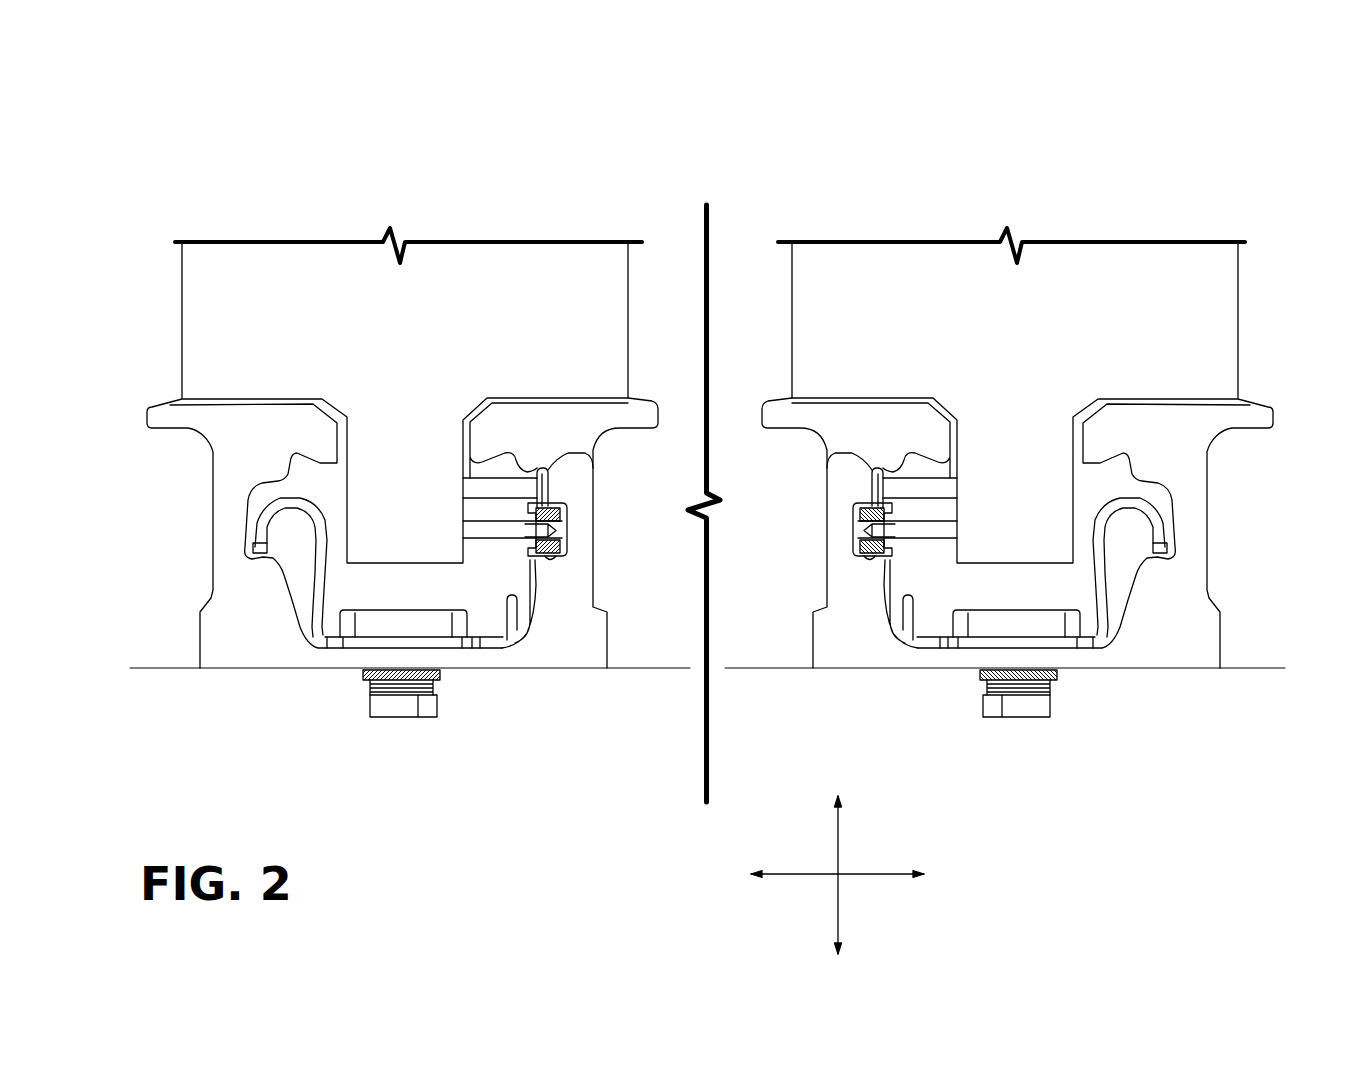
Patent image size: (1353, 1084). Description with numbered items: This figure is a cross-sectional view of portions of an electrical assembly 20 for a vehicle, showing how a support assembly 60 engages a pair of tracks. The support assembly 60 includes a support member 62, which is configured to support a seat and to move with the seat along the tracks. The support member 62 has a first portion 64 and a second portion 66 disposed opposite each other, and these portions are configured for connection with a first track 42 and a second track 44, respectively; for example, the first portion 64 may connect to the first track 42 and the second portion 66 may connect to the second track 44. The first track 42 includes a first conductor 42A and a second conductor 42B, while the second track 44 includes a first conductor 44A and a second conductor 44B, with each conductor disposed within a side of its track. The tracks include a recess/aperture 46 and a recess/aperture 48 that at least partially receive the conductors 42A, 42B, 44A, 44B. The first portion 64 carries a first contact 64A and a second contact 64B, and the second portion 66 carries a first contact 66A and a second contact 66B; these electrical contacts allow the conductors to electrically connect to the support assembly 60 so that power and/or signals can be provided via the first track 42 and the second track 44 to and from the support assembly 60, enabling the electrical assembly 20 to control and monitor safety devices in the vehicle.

The electrical assembly 20 is at (1157, 763).
The first track 42 is at (530, 415).
The first conductor 42A is at (558, 569).
The second conductor 42B is at (555, 465).
The second track 44 is at (876, 420).
The first conductor 44A is at (861, 570).
The second conductor 44B is at (866, 466).
The recess/aperture 46 is at (558, 496).
The recess/aperture 48 is at (856, 496).
The support assembly 60 is at (748, 110).
The support member 62 is at (716, 200).
The first portion 64 is at (305, 229).
The first contact 64A is at (487, 540).
The second contact 64B is at (463, 462).
The second portion 66 is at (1135, 223).
The first contact 66A is at (937, 540).
The second contact 66B is at (947, 477).